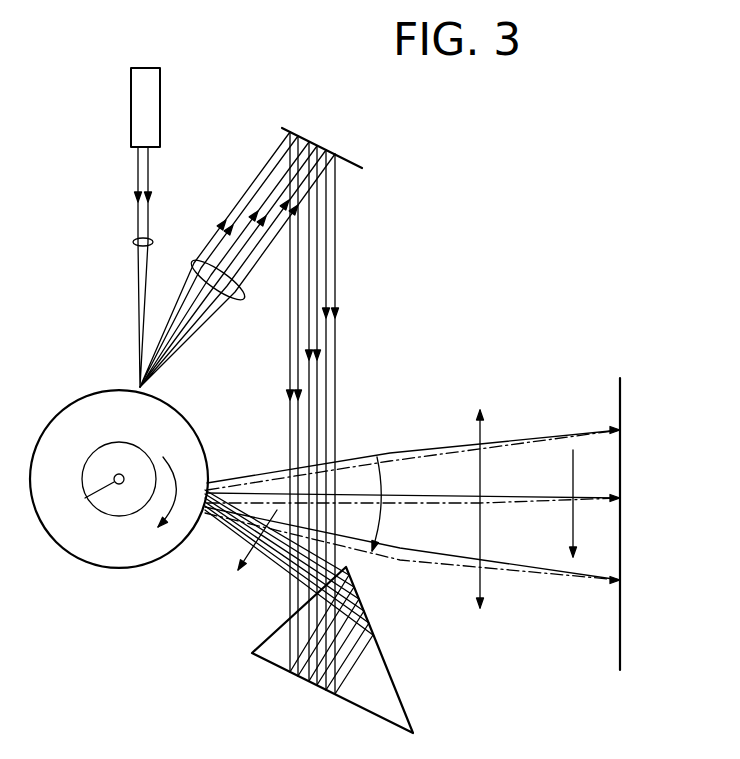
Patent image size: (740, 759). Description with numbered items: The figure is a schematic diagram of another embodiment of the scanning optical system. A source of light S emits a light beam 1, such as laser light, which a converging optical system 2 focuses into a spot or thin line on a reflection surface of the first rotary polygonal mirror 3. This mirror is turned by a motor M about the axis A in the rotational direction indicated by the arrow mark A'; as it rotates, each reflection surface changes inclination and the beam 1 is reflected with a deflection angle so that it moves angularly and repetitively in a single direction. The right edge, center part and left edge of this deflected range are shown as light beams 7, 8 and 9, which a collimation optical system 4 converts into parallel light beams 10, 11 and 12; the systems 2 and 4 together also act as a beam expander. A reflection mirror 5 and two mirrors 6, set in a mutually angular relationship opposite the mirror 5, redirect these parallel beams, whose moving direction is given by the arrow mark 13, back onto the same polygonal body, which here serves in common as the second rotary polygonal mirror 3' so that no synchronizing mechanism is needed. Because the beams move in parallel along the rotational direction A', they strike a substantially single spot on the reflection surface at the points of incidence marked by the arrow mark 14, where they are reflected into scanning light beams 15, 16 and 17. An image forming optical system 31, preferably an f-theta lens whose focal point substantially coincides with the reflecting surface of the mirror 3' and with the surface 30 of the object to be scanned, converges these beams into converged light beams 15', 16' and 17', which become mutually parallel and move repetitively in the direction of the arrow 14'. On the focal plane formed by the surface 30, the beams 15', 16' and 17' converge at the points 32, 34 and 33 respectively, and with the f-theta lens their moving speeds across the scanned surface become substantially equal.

The source of light S is at (131, 103).
The light beam 1 is at (150, 168).
The converging optical system 2 is at (133, 242).
The first rotary polygonal mirror 3 is at (119, 407).
The second rotary polygonal mirror 3' is at (119, 536).
The motor M is at (88, 470).
The axis A is at (95, 493).
The arrow mark A' is at (166, 478).
The collimation optical system 4 is at (200, 262).
The reflection mirror 5 is at (343, 157).
The two mirrors 6 is at (400, 680).
The right edge light beam 7 is at (180, 308).
The center part light beam 8 is at (210, 298).
The left edge light beam 9 is at (197, 335).
The parallel light beam 10 is at (293, 345).
The parallel light beam 11 is at (317, 260).
The parallel light beam 12 is at (330, 333).
The arrow mark 13 is at (289, 592).
The arrow mark 14 is at (406, 504).
The arrow 14' is at (548, 503).
The scanning light beam 15 is at (413, 438).
The converged light beam 15' is at (413, 435).
The scanning light beam 16 is at (413, 475).
The converged light beam 16' is at (413, 474).
The scanning light beam 17 is at (412, 560).
The converged light beam 17' is at (412, 575).
The surface of object to be scanned 30 is at (620, 393).
The image forming optical system 31 is at (483, 408).
The point of convergence 32 is at (628, 430).
The point of convergence 33 is at (622, 580).
The point of convergence 34 is at (628, 497).